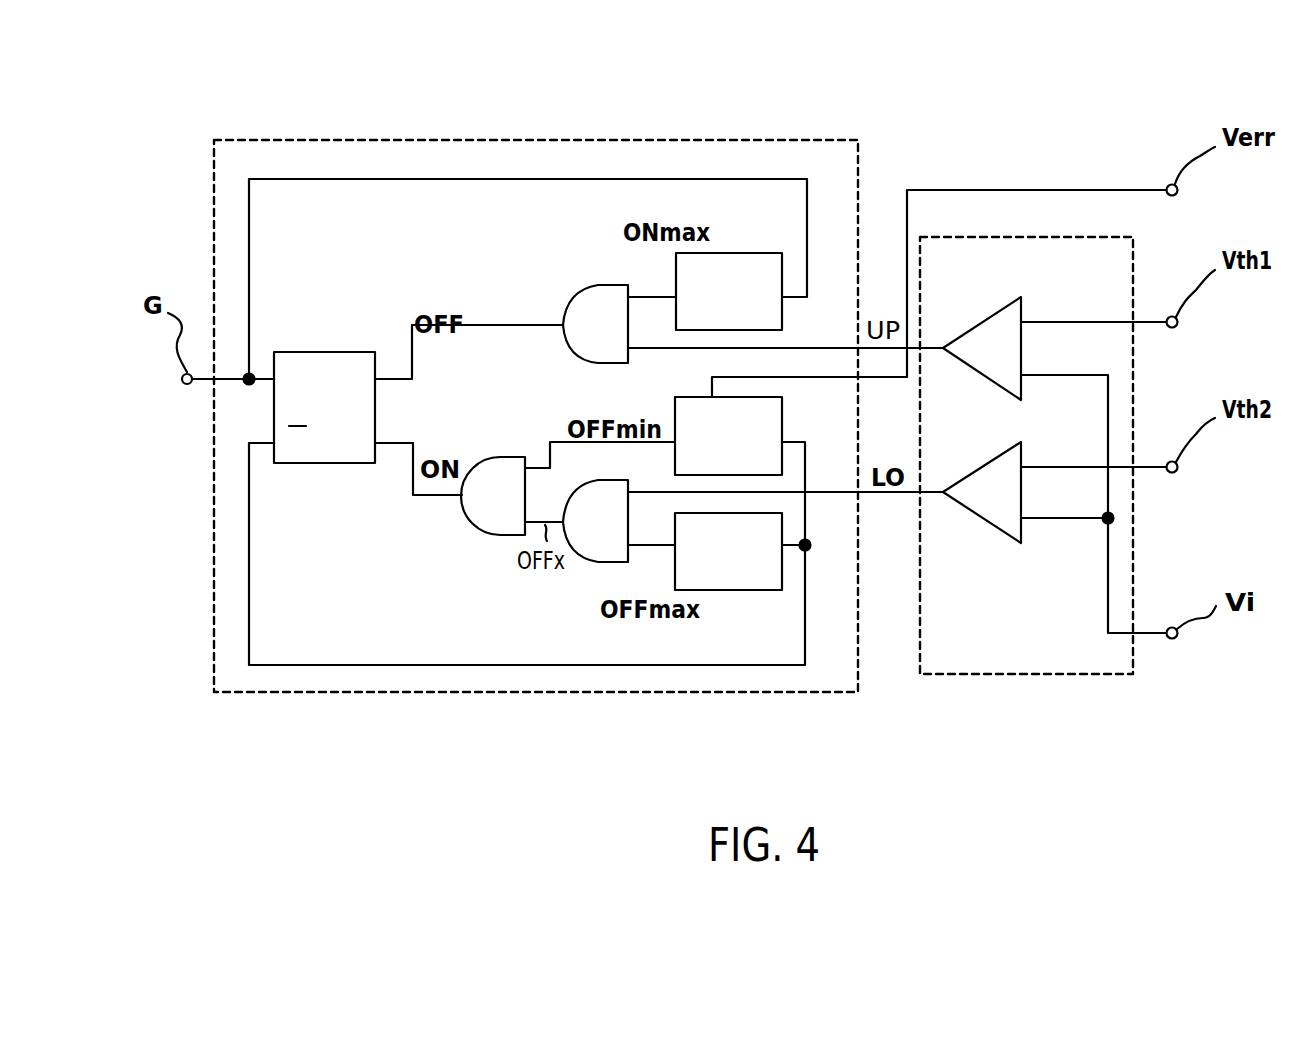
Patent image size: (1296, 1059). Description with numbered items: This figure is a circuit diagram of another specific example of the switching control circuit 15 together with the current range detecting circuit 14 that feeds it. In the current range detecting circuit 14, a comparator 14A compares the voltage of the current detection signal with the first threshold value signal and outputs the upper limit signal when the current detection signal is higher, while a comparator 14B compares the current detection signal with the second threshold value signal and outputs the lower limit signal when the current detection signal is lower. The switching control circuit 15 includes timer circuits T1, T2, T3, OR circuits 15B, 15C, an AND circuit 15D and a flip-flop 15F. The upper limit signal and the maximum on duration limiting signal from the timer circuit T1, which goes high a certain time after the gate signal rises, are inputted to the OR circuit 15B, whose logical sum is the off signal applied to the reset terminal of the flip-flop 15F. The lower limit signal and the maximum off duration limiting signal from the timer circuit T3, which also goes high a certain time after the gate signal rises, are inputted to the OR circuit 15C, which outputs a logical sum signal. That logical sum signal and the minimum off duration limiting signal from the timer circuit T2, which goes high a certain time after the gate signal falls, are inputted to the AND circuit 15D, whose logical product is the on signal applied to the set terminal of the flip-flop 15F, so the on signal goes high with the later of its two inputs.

The current range detecting circuit 14 is at (1127, 673).
The comparator 14A is at (993, 327).
The comparator 14B is at (997, 517).
The switching control circuit 15 is at (492, 693).
The OR circuit 15B is at (590, 305).
The OR circuit 15C is at (592, 543).
The AND circuit 15D is at (482, 510).
The flip-flop 15F is at (313, 463).
The timer circuit T1 is at (768, 263).
The timer circuit T2 is at (770, 431).
The timer circuit T3 is at (755, 590).